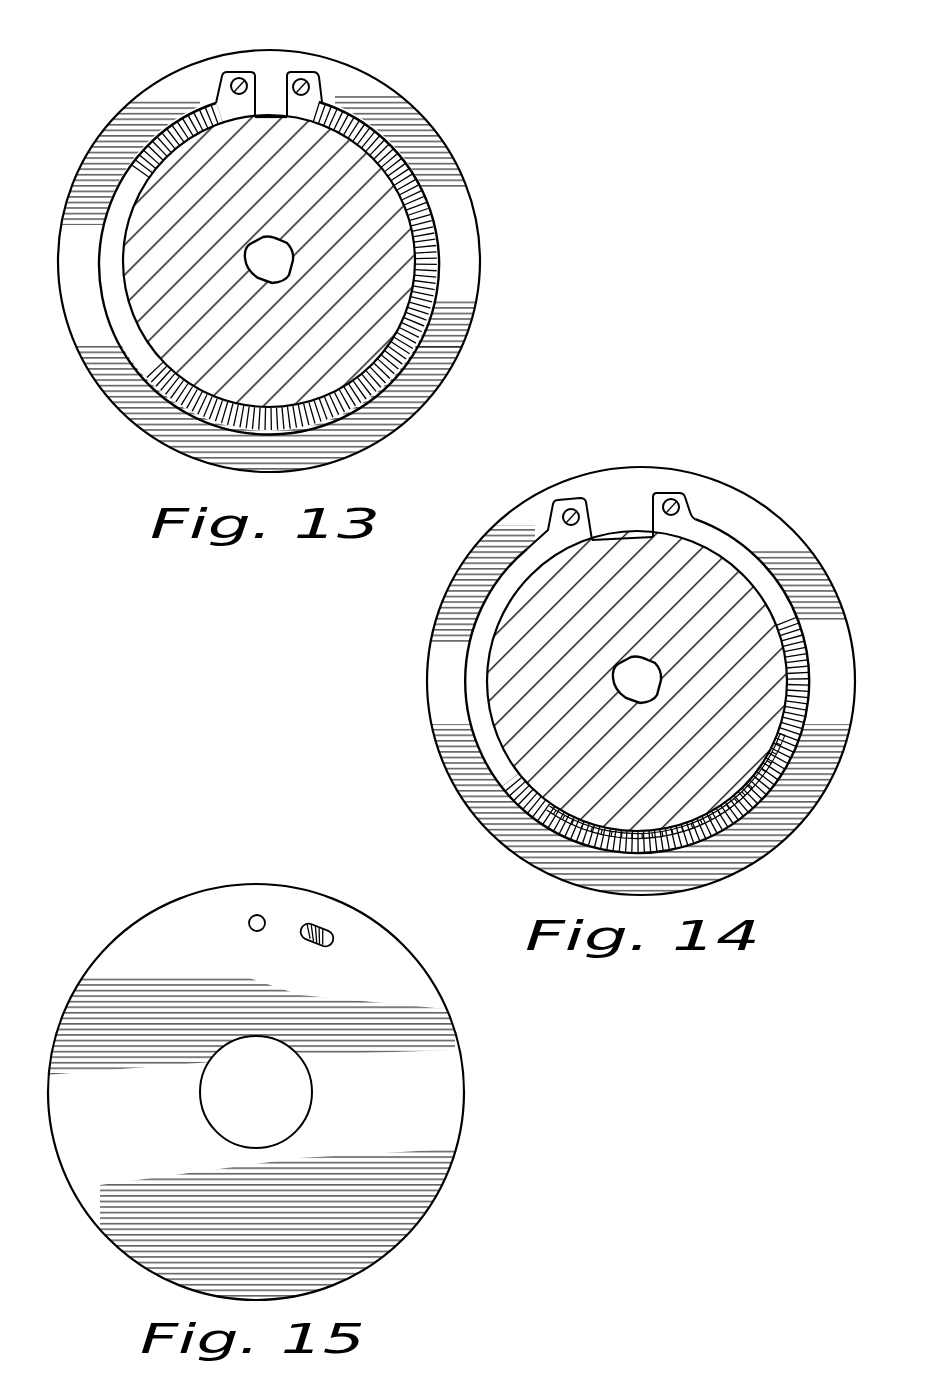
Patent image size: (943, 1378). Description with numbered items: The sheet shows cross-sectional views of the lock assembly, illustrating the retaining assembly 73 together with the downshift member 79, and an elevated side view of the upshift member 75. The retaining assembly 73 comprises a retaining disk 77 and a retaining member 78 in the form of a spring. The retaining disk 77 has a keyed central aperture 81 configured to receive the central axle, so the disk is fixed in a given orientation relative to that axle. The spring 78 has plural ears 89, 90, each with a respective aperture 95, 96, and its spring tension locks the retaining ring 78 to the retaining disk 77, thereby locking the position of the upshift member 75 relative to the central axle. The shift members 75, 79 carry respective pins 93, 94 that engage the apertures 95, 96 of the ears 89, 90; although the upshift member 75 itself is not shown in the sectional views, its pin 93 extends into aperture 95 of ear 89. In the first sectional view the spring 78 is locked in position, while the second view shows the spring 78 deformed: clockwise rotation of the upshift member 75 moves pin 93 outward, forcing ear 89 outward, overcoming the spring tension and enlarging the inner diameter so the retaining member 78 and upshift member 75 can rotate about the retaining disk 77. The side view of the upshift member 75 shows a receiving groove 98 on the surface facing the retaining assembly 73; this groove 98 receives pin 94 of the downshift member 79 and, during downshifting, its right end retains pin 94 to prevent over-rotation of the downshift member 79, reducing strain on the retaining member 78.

In FIG. 13, the retaining assembly 73 is at (448, 226).
In FIG. 14, the retaining assembly 73 is at (827, 651).
In FIG. 15, the upshift member 75 is at (439, 1195).
In FIG. 13, the retaining disk 77 is at (422, 280).
In FIG. 14, the retaining disk 77 is at (788, 700).
In FIG. 13, the retaining member 78 is at (112, 329).
In FIG. 14, the retaining member 78 is at (474, 745).
In FIG. 13, the downshift member 79 is at (83, 152).
In FIG. 14, the downshift member 79 is at (428, 672).
In FIG. 13, the keyed central aperture 81 is at (272, 258).
In FIG. 14, the keyed central aperture 81 is at (645, 680).
In FIG. 13, the ear 89 is at (320, 88).
In FIG. 14, the ear 89 is at (684, 508).
In FIG. 13, the ear 90 is at (223, 92).
In FIG. 14, the ear 90 is at (555, 527).
In FIG. 13, the pin 93 is at (291, 80).
In FIG. 14, the pin 93 is at (665, 500).
In FIG. 15, the pin 93 is at (253, 932).
In FIG. 13, the pin 94 is at (251, 70).
In FIG. 14, the pin 94 is at (588, 510).
In FIG. 15, the pin 94 is at (300, 938).
In FIG. 13, the aperture 95 is at (306, 78).
In FIG. 14, the aperture 95 is at (675, 500).
In FIG. 13, the aperture 96 is at (235, 78).
In FIG. 14, the aperture 96 is at (568, 511).
In FIG. 15, the receiving groove 98 is at (335, 942).